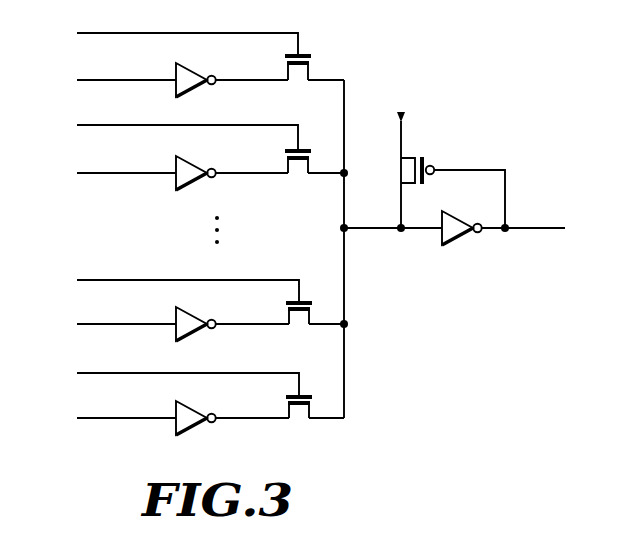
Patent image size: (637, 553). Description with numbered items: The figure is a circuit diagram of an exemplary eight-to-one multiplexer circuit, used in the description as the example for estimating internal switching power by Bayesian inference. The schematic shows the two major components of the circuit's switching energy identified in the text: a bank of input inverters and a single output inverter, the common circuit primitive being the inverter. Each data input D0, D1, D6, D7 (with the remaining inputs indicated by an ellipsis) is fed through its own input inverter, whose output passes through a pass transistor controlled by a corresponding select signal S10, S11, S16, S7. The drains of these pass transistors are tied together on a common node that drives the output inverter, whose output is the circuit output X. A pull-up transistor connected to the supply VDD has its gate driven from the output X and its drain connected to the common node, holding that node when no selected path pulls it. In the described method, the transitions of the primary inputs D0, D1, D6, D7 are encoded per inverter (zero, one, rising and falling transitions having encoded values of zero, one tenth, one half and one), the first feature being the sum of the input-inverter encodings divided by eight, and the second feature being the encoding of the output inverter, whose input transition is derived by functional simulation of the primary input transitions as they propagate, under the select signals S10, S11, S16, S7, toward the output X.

The select signal S10 is at (176, 51).
The select signal S11 is at (176, 143).
The select signal S16 is at (176, 296).
The select signal S7 is at (176, 390).
The data input D0 is at (193, 80).
The data input D1 is at (193, 173).
The data input D6 is at (193, 324).
The data input D7 is at (193, 418).
The supply voltage VDD with pull-up PMOS transistor VDD is at (445, 154).
The output X is at (463, 228).